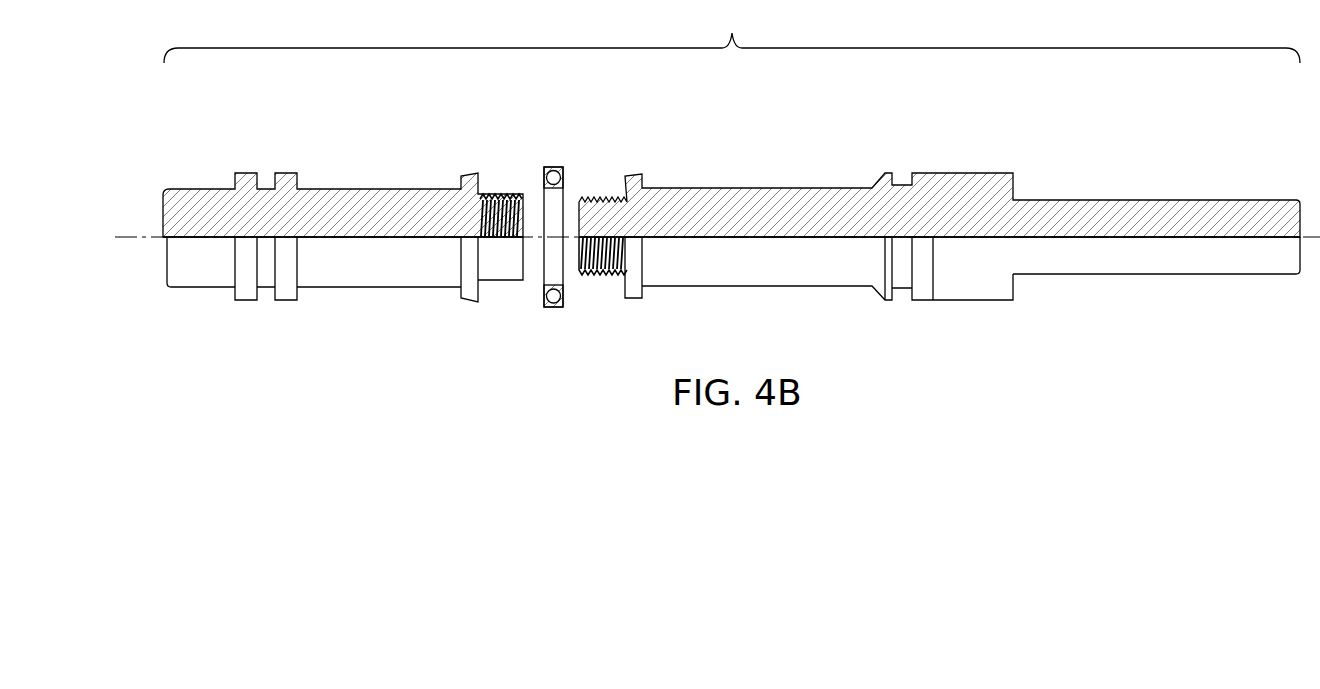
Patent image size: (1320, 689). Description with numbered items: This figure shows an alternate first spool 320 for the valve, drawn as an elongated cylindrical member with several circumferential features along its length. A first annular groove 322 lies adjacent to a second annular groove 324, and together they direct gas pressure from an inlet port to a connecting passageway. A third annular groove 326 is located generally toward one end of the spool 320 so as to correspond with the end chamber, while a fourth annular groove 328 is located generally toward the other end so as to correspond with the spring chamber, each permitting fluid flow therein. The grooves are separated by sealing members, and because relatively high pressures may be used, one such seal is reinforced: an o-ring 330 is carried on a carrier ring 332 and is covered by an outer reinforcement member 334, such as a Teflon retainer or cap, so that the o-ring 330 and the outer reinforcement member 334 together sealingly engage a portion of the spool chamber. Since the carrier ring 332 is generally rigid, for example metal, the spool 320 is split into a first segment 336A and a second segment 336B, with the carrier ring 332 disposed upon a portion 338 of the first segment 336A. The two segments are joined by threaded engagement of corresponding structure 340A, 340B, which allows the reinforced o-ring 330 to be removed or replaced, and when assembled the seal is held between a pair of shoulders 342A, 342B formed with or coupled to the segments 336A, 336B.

The first spool 320 is at (732, 35).
The first annular groove 322 is at (332, 213).
The second annular groove 324 is at (927, 232).
The third annular groove 326 is at (211, 178).
The fourth annular groove 328 is at (1110, 179).
The o-ring 330 is at (559, 174).
The carrier ring 332 is at (568, 227).
The outer reinforcement member 334 is at (557, 167).
The first segment 336A is at (190, 207).
The second segment 336B is at (828, 205).
The portion 338 is at (476, 197).
The corresponding structure 340A is at (526, 216).
The corresponding structure 340B is at (600, 283).
The shoulder 342A is at (468, 296).
The shoulder 342B is at (633, 297).